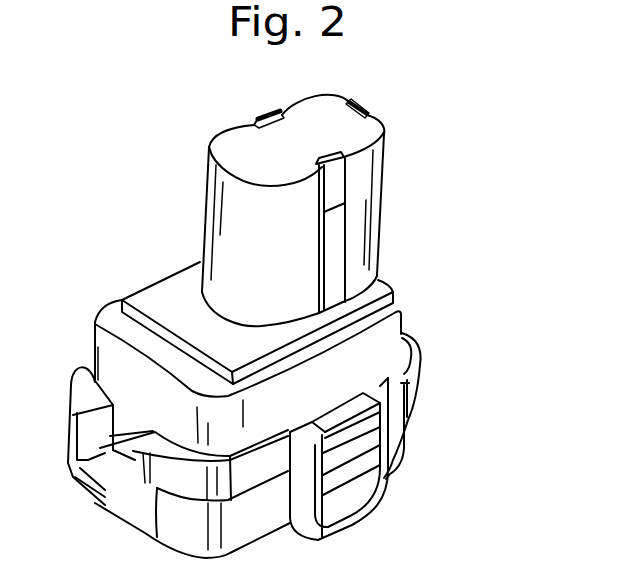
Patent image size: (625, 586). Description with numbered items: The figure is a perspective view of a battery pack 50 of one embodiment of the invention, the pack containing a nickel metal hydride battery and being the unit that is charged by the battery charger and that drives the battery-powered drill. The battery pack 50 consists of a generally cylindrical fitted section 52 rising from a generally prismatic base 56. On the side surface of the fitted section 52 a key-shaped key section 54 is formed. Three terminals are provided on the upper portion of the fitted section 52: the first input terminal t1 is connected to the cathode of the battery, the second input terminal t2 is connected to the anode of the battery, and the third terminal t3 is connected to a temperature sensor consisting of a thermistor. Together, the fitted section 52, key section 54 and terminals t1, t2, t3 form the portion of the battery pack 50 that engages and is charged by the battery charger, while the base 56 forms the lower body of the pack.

The battery pack 50 is at (143, 115).
The fitted section 52 is at (373, 223).
The key section 54 is at (345, 262).
The base 56 is at (413, 386).
The first input terminal t1 is at (257, 120).
The second input terminal t2 is at (336, 171).
The third terminal t3 is at (352, 102).